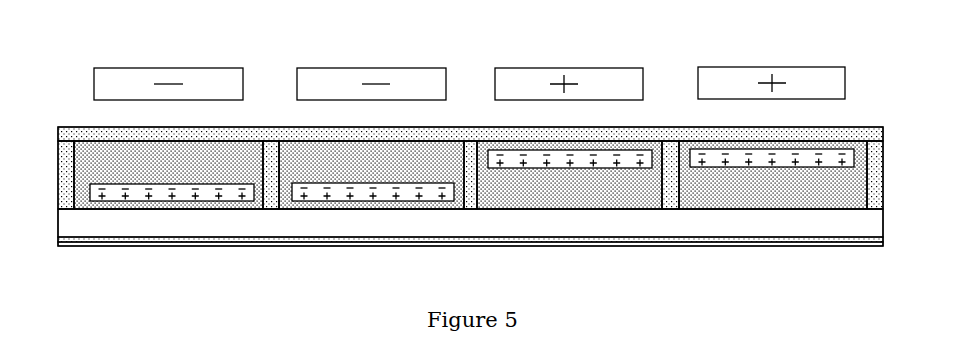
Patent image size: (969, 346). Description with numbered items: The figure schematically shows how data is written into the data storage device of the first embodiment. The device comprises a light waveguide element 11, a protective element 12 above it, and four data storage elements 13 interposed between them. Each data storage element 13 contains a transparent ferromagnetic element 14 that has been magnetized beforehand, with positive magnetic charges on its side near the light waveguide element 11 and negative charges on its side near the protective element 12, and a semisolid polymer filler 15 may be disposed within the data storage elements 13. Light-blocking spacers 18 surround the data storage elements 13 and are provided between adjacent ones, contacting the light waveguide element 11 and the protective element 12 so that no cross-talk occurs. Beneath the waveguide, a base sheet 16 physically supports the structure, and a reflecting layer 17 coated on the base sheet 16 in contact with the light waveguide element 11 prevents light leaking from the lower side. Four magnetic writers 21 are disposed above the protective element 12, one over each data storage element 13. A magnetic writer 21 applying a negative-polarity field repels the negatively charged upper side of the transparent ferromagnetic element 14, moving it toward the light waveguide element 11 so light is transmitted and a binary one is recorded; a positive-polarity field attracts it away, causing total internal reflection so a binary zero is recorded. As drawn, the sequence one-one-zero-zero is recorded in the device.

The light waveguide element 11 is at (455, 225).
The protective element 12 is at (215, 136).
The data storage element 13 is at (81, 192).
The transparent ferromagnetic element 14 is at (161, 193).
The semisolid polymer filler 15 is at (128, 206).
The base sheet 16 is at (387, 246).
The reflecting layer 17 is at (525, 237).
The light-blocking spacer 18 is at (269, 197).
The magnetic writer 21 is at (173, 68).